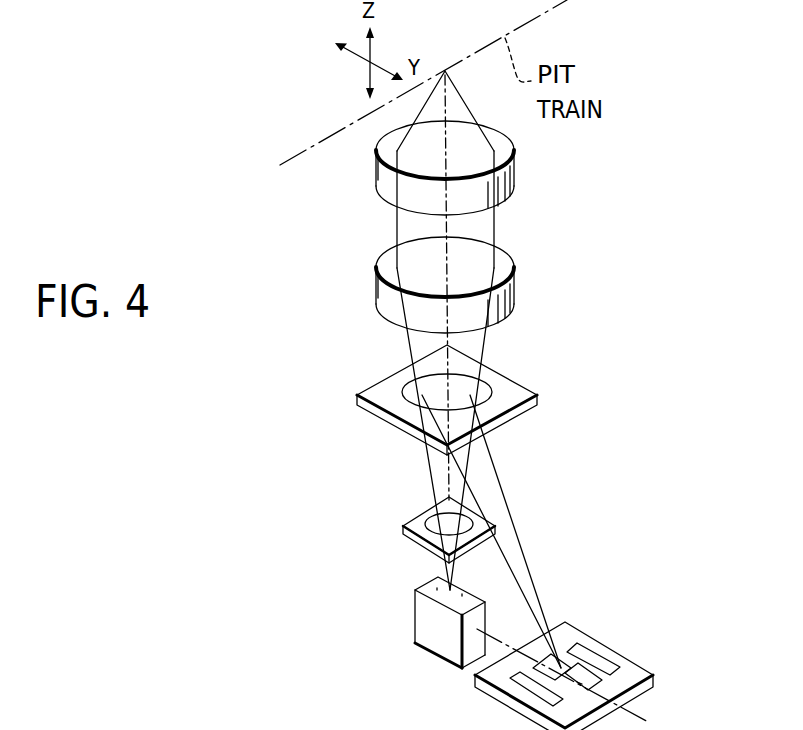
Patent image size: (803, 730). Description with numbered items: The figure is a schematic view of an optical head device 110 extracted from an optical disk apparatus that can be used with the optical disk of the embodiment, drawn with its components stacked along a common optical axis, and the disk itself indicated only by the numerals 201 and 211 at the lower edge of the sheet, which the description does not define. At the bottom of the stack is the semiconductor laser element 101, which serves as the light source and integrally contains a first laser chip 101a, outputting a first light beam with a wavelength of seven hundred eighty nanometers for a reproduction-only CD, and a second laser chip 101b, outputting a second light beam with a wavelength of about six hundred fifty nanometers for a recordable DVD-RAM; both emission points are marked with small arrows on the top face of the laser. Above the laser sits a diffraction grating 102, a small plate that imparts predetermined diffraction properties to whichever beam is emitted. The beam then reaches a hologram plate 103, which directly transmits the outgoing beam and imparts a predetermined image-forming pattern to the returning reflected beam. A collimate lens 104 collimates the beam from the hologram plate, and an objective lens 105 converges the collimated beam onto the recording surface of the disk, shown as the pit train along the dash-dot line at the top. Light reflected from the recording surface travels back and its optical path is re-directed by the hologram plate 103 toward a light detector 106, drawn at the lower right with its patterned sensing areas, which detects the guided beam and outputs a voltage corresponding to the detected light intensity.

The semiconductor laser element 101 is at (415, 626).
The first laser chip 101a is at (478, 575).
The second laser chip 101b is at (436, 584).
The diffraction grating 102 is at (403, 527).
The hologram plate 103 is at (357, 400).
The collimate lens 104 is at (377, 282).
The objective lens 105 is at (376, 177).
The light detector 106 is at (617, 652).
The optical head device 110 is at (335, 558).
The optical disc 201 is at (362, 729).
The recording layer 211 is at (463, 720).